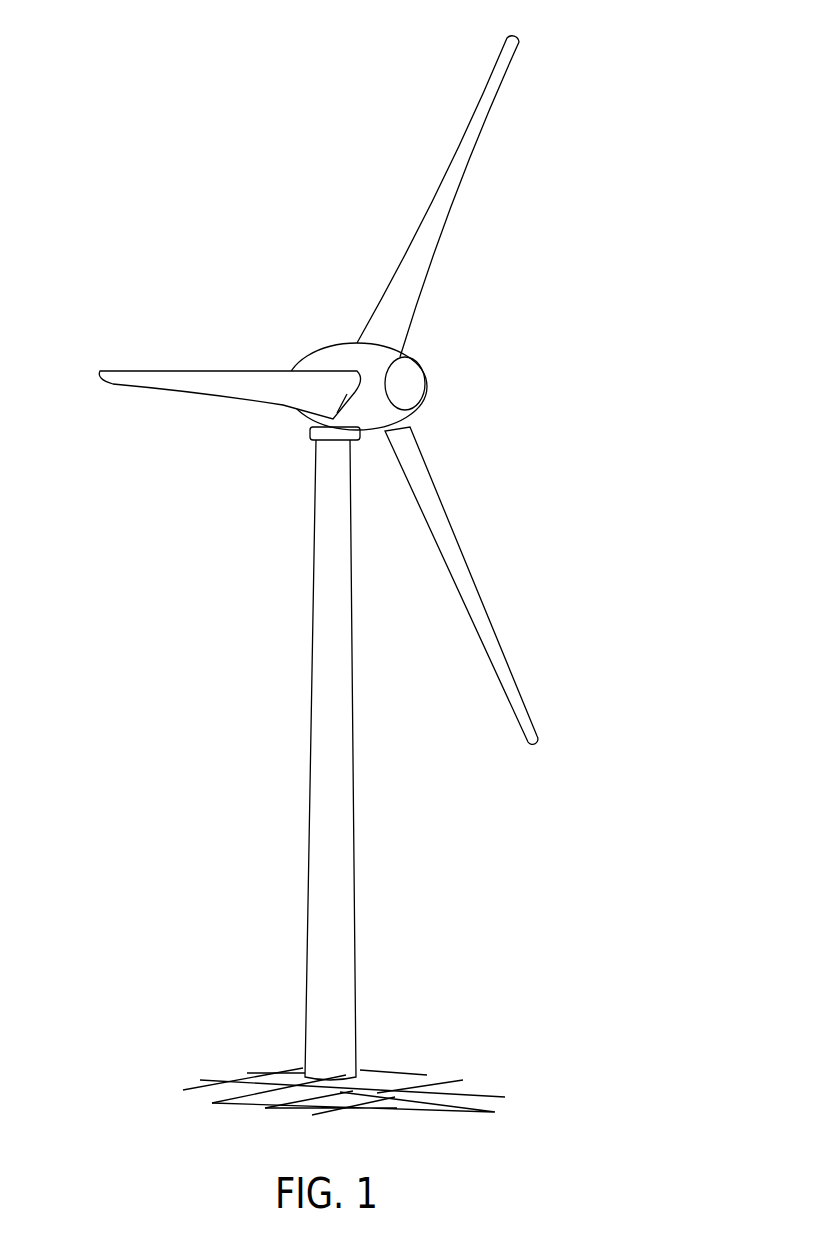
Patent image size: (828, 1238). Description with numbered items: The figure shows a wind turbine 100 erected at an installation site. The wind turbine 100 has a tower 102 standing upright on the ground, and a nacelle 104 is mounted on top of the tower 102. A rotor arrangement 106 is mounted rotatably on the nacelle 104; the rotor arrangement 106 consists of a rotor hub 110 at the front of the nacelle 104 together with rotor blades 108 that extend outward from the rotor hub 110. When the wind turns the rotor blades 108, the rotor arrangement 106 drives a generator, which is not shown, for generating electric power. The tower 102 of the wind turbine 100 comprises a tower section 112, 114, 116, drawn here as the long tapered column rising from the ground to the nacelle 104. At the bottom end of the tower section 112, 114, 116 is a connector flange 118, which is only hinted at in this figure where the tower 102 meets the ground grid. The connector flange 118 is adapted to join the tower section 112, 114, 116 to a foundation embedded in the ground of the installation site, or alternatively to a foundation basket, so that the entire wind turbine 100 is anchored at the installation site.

The wind turbine 100 is at (236, 506).
The tower 102 is at (363, 813).
The nacelle 104 is at (317, 355).
The rotor arrangement 106 is at (540, 322).
The rotor blades 108 is at (157, 378).
The rotor hub 110 is at (410, 422).
The tower section 112 is at (438, 760).
The tower section 114 is at (438, 760).
The tower section 116 is at (320, 978).
The connector flange 118 is at (357, 1063).